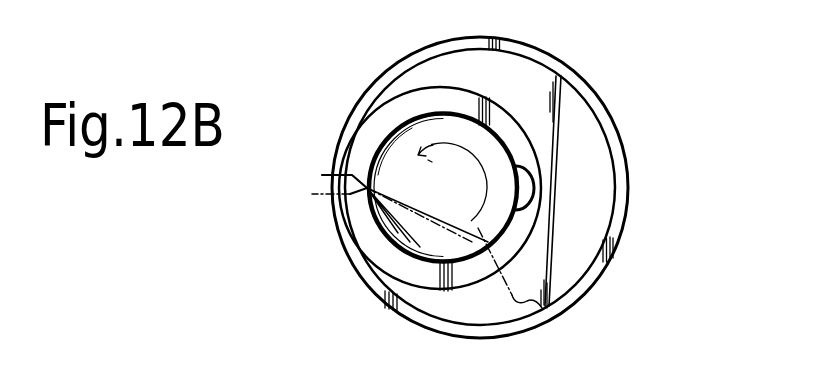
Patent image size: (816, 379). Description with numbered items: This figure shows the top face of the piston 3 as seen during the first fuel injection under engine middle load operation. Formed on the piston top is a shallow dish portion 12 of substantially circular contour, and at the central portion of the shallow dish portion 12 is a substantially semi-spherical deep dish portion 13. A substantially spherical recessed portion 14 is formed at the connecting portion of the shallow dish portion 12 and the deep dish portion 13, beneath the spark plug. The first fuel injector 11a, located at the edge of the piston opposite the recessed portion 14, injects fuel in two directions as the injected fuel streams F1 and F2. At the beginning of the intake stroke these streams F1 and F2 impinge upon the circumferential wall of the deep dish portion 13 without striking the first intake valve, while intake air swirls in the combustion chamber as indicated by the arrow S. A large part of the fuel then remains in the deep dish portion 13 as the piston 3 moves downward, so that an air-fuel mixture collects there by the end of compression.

The piston 3 is at (597, 90).
The shallow dish portion 12 is at (413, 288).
The deep dish portion 13 is at (411, 118).
The first fuel injector 11a is at (318, 172).
The recessed portion 14 is at (528, 190).
The swirl motion S is at (480, 160).
The injected fuel stream F1 is at (356, 261).
The injected fuel stream F2 is at (545, 312).